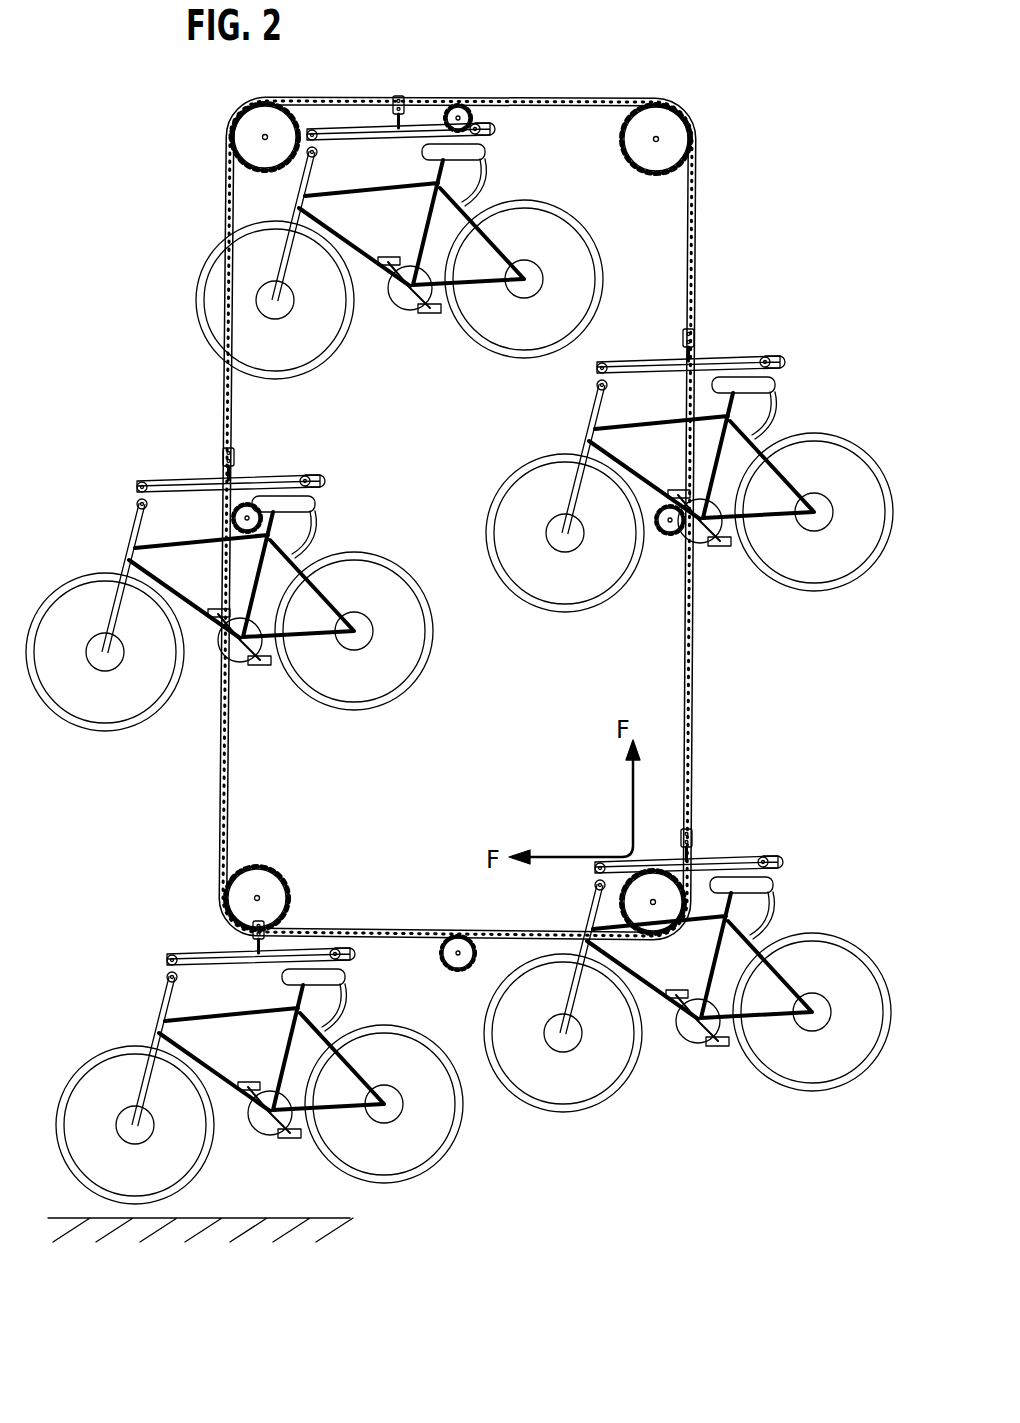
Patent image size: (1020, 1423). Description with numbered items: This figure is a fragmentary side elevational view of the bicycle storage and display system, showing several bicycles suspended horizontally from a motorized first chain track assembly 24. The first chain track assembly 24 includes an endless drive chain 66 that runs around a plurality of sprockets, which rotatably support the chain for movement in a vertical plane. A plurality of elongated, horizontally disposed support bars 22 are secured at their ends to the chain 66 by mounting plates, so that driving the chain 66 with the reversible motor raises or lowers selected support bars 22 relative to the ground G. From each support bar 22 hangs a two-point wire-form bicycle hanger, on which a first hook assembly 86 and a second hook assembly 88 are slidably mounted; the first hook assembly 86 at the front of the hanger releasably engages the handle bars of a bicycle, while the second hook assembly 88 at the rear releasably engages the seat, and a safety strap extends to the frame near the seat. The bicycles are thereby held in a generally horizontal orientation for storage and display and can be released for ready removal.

The support bar 22 is at (253, 940).
The first chain track assembly 24 is at (524, 518).
The chain 66 is at (697, 268).
The first hook assembly 86 is at (154, 965).
The second hook assembly 88 is at (352, 952).
The ground G is at (335, 1218).